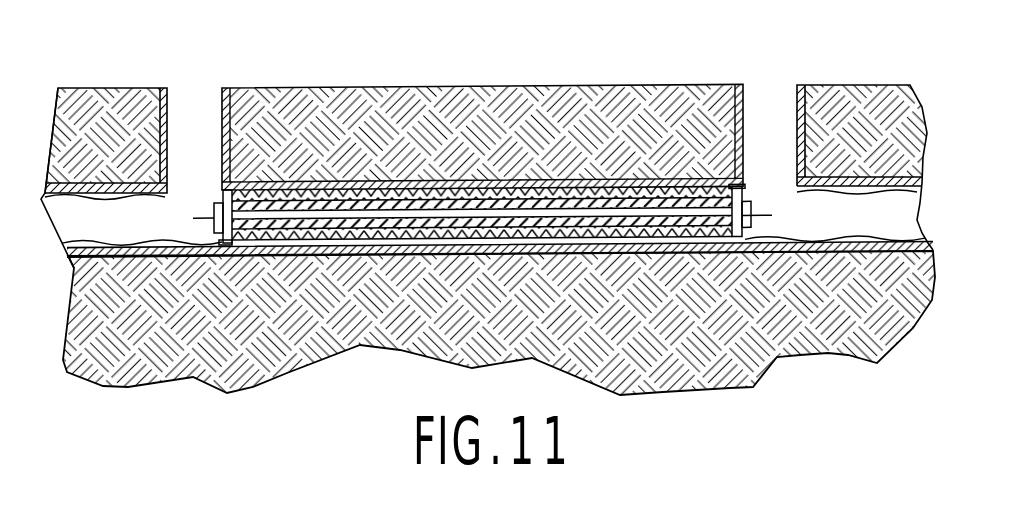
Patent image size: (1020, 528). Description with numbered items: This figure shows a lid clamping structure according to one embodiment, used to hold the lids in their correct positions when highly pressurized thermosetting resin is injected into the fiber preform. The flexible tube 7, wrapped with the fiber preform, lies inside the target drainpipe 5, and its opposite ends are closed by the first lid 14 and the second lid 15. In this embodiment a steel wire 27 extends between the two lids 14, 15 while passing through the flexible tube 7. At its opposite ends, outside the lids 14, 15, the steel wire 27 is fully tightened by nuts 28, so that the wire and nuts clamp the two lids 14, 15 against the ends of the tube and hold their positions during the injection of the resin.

The drainpipe 5 is at (118, 228).
The flexible tube 7 is at (482, 205).
The first lid 14 is at (222, 195).
The second lid 15 is at (743, 237).
The steel wire 27 is at (762, 219).
The nuts 28 is at (222, 233).